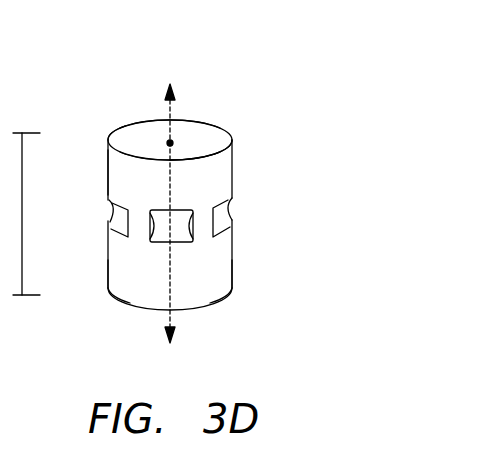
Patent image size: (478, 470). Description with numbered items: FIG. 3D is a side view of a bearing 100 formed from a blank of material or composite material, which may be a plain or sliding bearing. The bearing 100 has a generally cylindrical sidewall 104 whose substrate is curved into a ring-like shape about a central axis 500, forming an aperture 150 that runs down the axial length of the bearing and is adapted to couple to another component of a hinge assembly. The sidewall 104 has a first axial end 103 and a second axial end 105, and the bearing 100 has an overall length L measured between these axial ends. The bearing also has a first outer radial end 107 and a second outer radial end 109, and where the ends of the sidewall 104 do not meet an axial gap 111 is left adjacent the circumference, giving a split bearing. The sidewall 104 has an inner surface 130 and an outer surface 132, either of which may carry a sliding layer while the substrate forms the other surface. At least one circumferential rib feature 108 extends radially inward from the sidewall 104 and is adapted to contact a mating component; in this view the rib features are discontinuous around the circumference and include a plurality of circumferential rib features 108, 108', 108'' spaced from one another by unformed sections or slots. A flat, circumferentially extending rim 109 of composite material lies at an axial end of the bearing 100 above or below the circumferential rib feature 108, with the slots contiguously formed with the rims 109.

The bearing 100 is at (201, 186).
The first axial end 103 is at (232, 293).
The generally cylindrical sidewall 104 is at (218, 255).
The second axial end 105 is at (233, 140).
The first outer radial end 107 is at (110, 138).
The circumferential rib feature 108 is at (84, 239).
The circumferential rib feature 108' is at (193, 283).
The circumferential rib feature 108'' is at (264, 218).
The circumferentially extending rim 109 is at (233, 143).
The axial gap 111 is at (110, 291).
The inner surface 130 is at (152, 125).
The outer surface 132 is at (110, 178).
The aperture 150 is at (138, 135).
The central axis 500 is at (175, 140).
The overall length L is at (25, 202).